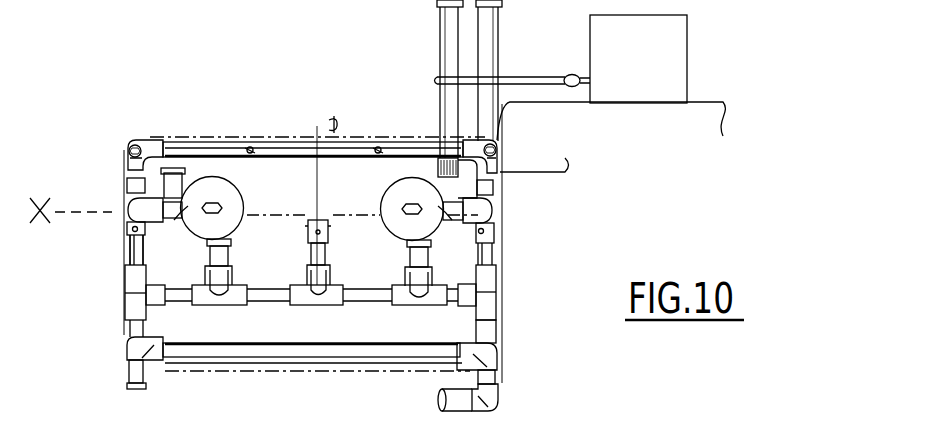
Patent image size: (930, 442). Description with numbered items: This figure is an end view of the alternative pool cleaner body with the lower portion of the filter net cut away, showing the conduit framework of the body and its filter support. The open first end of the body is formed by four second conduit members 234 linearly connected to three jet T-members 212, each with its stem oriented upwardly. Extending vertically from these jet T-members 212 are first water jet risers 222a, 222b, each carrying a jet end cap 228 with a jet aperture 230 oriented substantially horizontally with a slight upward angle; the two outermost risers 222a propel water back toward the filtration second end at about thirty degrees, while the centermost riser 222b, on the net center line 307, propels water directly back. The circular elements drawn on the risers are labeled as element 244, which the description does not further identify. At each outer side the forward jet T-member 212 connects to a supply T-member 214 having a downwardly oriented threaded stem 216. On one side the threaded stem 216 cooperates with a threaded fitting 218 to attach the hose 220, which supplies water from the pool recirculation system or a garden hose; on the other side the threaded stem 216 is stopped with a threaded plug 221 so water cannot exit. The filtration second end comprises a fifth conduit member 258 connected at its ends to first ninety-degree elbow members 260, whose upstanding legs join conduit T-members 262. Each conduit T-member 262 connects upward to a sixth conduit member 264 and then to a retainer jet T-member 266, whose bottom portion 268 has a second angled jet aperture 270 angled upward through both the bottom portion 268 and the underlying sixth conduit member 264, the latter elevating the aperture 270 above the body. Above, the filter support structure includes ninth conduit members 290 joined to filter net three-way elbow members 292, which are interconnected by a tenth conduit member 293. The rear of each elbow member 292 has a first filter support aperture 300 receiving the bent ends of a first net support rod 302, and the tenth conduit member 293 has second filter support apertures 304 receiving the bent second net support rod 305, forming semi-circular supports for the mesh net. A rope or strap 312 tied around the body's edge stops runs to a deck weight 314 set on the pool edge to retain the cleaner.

The forward jet T-member 212 is at (403, 305).
The supply T-member 214 is at (442, 21).
The threaded stem 216 is at (128, 366).
The threaded fitting 218 is at (484, 404).
The hose 220 is at (440, 403).
The threaded plug 221 is at (127, 387).
The outermost first water jet riser 222a is at (211, 247).
The centermost first water jet riser 222b is at (311, 257).
The jet end cap 228 is at (314, 222).
The jet aperture 230 is at (318, 232).
The second conduit member 234 is at (183, 305).
The solenoid 244 is at (220, 201).
The fifth conduit member 258 is at (297, 358).
The first 90° elbow member 260 is at (497, 328).
The conduit T-member 262 is at (125, 287).
The sixth conduit member 264 is at (130, 250).
The retainer jet T-member 266 is at (500, 207).
The bottom portion of retainer jet T-member 268 is at (494, 241).
The second angled jet aperture 270 is at (128, 228).
The ninth conduit member 290 is at (128, 186).
The filter net three-way elbow member 292 is at (130, 157).
The tenth conduit member 293 is at (187, 141).
The first filter support aperture 300 is at (129, 142).
The first net support rod 302 is at (136, 142).
The second filter support aperture 304 is at (258, 149).
The second net support rod 305 is at (250, 148).
The net center line 307 is at (318, 126).
The rope or strap 312 is at (540, 74).
The deck weight 314 is at (688, 22).